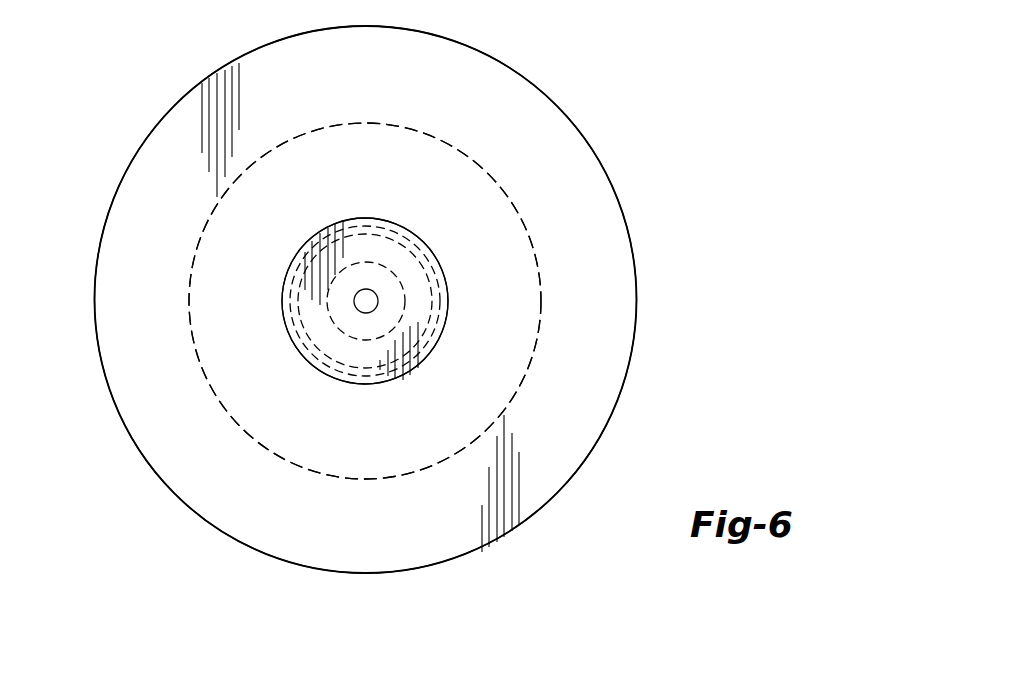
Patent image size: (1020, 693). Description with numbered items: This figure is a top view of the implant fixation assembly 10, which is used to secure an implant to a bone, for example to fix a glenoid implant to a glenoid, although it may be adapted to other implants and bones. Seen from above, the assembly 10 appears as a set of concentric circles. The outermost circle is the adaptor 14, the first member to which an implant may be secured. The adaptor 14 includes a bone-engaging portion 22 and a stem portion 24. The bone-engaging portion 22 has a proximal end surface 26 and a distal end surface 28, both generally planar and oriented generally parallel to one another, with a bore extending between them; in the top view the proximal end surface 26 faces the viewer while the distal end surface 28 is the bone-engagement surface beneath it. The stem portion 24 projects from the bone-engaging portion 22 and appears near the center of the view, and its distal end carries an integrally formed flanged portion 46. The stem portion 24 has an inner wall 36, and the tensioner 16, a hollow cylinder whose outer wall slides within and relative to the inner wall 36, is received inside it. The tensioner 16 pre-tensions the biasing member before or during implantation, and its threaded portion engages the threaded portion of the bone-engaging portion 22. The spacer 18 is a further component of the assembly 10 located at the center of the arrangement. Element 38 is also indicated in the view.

The implant fixation assembly 10 is at (578, 78).
The adaptor 14 is at (133, 460).
The tensioner 16 is at (328, 335).
The spacer 18 is at (335, 312).
The bone-engaging portion 22 is at (131, 270).
The stem portion 24 is at (358, 218).
The proximal end surface 26 is at (218, 341).
The distal end surface 28 is at (245, 488).
The inner wall 36 is at (432, 297).
The hub flange 38 is at (433, 352).
The flanged portion 46 is at (393, 259).